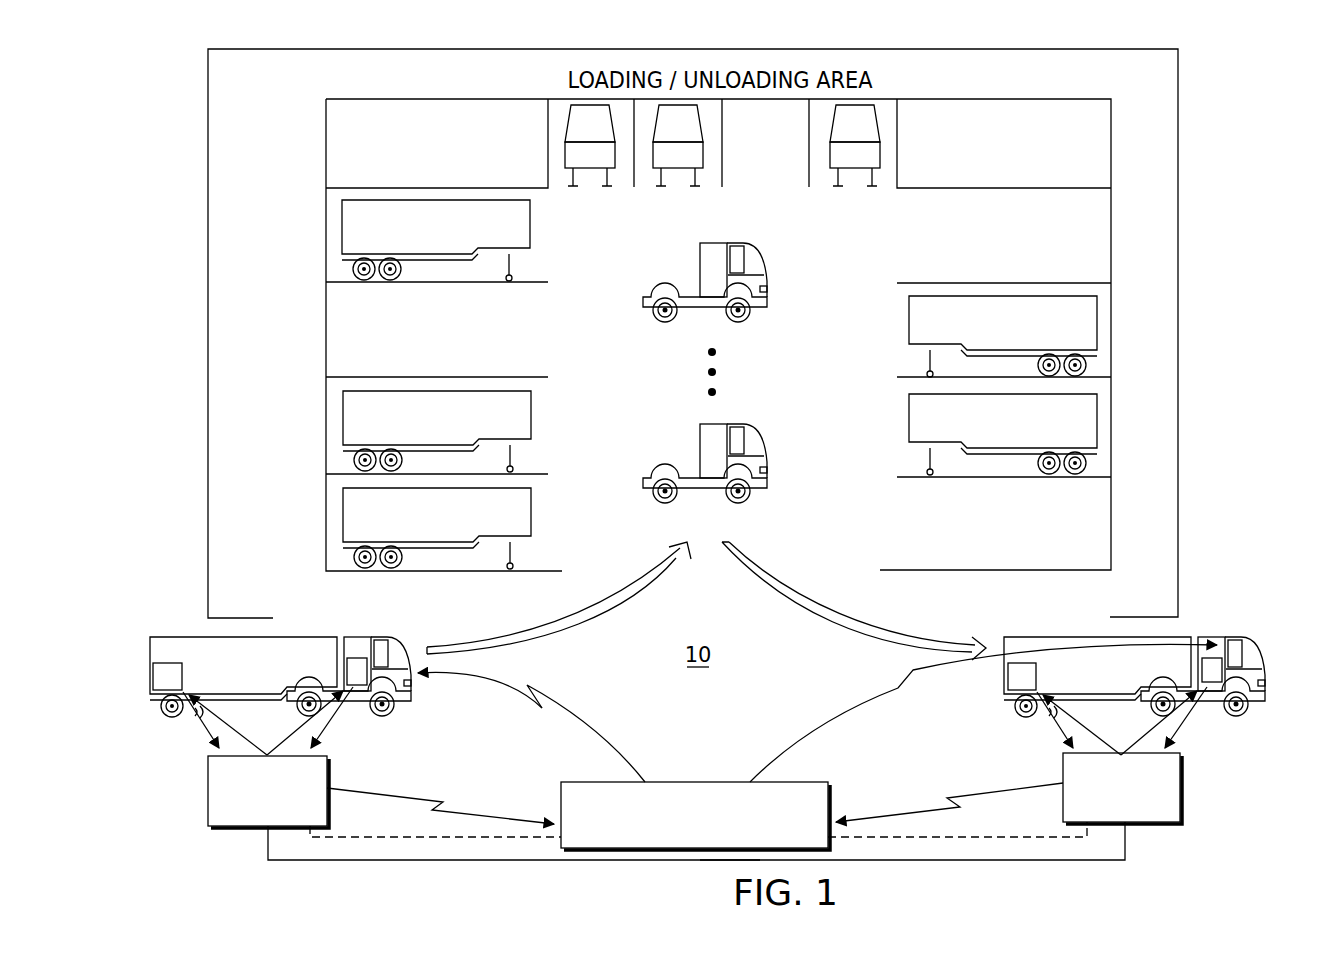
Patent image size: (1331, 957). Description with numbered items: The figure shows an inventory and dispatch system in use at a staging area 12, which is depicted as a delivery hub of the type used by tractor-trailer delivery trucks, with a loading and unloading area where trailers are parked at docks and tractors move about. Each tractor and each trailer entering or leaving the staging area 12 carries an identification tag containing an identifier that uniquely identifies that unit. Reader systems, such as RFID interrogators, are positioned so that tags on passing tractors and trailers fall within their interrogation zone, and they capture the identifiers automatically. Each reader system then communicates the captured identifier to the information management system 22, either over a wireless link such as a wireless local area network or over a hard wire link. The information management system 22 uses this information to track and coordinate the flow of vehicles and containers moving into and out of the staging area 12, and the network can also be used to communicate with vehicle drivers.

The staging area 12 is at (949, 49).
The information management system 22 is at (830, 790).